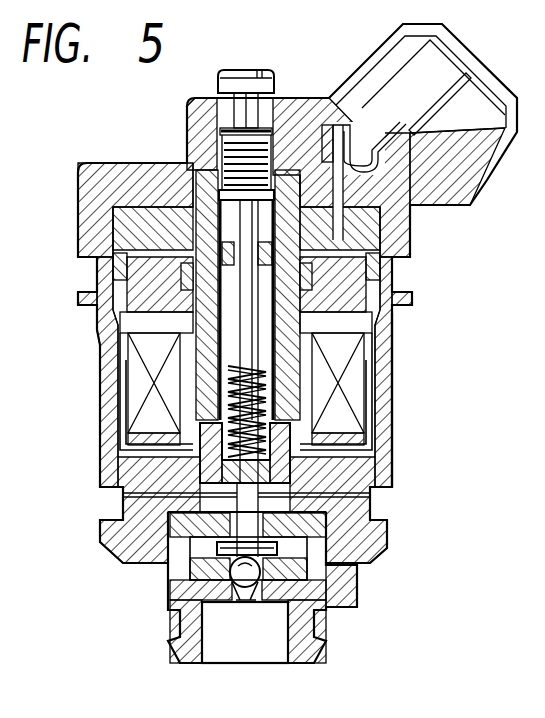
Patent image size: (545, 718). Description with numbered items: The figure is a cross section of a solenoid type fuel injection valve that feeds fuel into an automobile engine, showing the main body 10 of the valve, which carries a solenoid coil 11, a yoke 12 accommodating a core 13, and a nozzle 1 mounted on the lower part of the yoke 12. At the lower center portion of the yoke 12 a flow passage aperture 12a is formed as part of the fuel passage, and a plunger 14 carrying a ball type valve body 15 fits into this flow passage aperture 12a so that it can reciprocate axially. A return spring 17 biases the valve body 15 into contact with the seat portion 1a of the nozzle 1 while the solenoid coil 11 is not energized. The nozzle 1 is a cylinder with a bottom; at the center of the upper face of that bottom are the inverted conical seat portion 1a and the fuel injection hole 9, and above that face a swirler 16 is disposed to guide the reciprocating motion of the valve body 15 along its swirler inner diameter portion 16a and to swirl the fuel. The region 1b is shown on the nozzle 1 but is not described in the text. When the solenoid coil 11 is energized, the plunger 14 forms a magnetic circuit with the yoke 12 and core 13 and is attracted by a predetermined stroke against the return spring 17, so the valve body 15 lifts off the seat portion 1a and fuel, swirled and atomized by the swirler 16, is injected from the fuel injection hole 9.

The nozzle 1 is at (322, 650).
The seat portion 1a is at (290, 578).
The housing bore 1b is at (195, 545).
The fuel injection hole 9 is at (247, 592).
The main body 10 is at (418, 348).
The solenoid coil 11 is at (347, 397).
The yoke 12 is at (403, 233).
The flow passage aperture 12a is at (283, 493).
The core 13 is at (190, 101).
The plunger 14 is at (200, 494).
The valve body 15 is at (270, 578).
The swirler 16 is at (282, 552).
The swirler inner diameter portion 16a is at (232, 592).
The return spring 17 is at (240, 378).